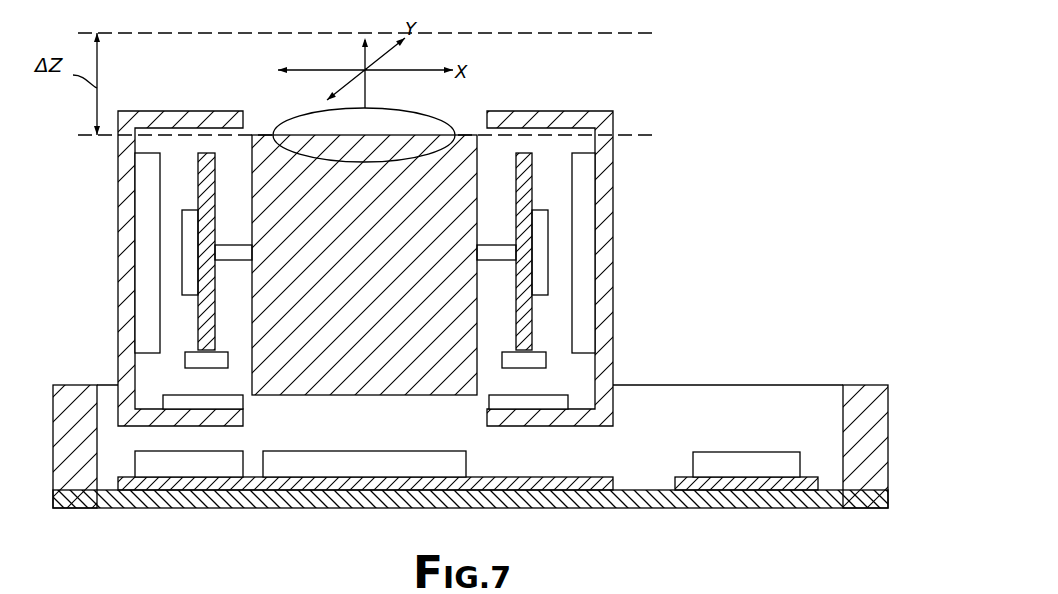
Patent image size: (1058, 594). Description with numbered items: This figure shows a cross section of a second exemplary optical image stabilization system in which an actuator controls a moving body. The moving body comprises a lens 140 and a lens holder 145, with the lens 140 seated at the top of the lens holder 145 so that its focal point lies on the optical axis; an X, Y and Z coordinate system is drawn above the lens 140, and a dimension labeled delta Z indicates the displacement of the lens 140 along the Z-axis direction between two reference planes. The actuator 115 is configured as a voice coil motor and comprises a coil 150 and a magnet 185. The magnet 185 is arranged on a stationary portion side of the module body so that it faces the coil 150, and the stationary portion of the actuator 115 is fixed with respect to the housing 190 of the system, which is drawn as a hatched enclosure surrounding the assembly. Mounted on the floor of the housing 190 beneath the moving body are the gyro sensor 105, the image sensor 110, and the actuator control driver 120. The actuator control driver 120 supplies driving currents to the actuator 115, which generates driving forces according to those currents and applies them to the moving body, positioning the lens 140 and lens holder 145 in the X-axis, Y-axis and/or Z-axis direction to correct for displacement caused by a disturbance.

The gyro sensor 105 is at (752, 452).
The image sensor 110 is at (466, 460).
The actuator 115 is at (678, 84).
The actuator control driver 120 is at (135, 462).
The lens 140 is at (445, 120).
The lens holder 145 is at (330, 395).
The coil 150 is at (544, 352).
The magnet 185 is at (177, 400).
The housing 190 is at (867, 385).